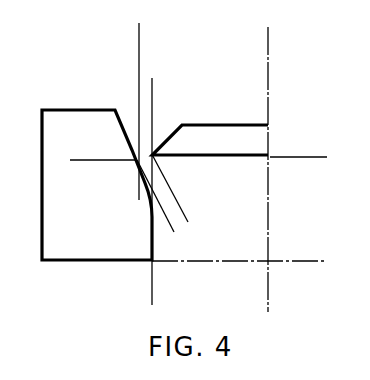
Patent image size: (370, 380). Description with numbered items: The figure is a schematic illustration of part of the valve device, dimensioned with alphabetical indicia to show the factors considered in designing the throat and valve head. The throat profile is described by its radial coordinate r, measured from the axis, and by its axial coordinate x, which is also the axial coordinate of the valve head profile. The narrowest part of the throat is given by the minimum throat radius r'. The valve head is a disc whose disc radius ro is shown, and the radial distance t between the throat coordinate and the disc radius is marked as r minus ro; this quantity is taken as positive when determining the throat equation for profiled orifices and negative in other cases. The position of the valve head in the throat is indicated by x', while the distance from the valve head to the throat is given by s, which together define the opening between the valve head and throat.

The radial coordinate of throat r is at (203, 35).
The disc radius ro is at (152, 92).
The radial distance r-ro t is at (120, 92).
The minimum throat radius r' is at (210, 296).
The axial coordinate of throat or valve head profile x is at (80, 210).
The position of valve head in throat x' is at (313, 209).
The distance from valve head to throat s is at (200, 197).